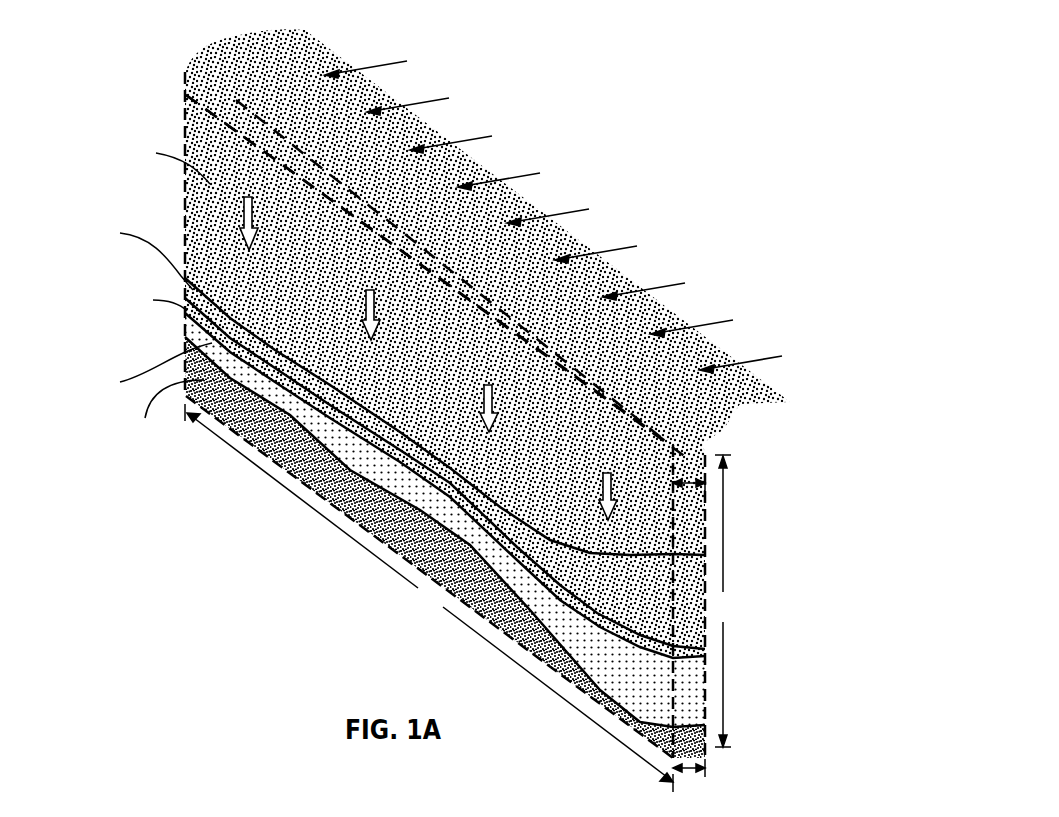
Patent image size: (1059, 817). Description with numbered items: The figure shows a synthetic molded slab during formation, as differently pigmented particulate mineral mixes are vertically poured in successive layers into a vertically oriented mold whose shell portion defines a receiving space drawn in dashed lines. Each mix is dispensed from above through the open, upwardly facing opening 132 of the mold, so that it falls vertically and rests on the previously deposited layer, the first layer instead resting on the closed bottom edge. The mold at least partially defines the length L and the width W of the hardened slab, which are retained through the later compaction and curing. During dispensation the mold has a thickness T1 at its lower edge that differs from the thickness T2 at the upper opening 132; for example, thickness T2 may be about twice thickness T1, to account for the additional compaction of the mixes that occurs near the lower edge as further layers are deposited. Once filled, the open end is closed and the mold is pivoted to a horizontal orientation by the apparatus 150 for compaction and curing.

The apparatus 150 is at (178, 93).
The upwardly facing opening 132 is at (683, 442).
The length L is at (429, 598).
The width W is at (724, 601).
The thickness at lower edge T1 is at (690, 772).
The thickness at upper opening T2 is at (681, 481).